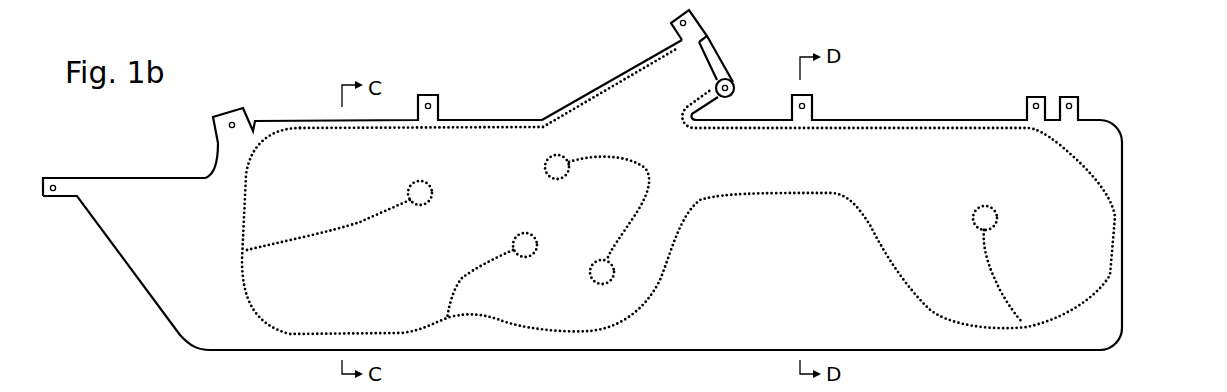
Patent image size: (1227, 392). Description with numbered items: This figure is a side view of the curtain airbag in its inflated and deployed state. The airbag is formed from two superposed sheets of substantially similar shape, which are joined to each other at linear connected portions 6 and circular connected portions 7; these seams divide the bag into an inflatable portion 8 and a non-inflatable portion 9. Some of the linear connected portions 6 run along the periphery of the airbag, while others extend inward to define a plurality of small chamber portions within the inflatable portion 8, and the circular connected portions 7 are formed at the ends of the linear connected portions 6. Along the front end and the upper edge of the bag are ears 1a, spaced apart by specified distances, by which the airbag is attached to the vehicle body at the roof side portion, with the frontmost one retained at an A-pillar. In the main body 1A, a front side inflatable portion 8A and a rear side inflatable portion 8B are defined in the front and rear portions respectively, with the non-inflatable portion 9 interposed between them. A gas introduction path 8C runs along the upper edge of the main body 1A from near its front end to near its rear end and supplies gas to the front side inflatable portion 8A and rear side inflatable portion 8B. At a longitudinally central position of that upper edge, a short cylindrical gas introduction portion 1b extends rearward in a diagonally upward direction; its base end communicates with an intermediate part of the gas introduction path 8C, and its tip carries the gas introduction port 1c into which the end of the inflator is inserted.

The main body 1A is at (1170, 330).
The ears 1a is at (50, 198).
The gas introduction portion 1b is at (637, 62).
The gas introduction port 1c is at (712, 55).
The linear connected portions 6 is at (253, 163).
The circular connected portions 7 is at (433, 183).
The inflatable portion 8 is at (285, 203).
The front side inflatable portion 8A is at (258, 322).
The rear side inflatable portion 8B is at (1047, 328).
The gas introduction path 8C is at (806, 270).
The non-inflatable portion 9 is at (153, 265).